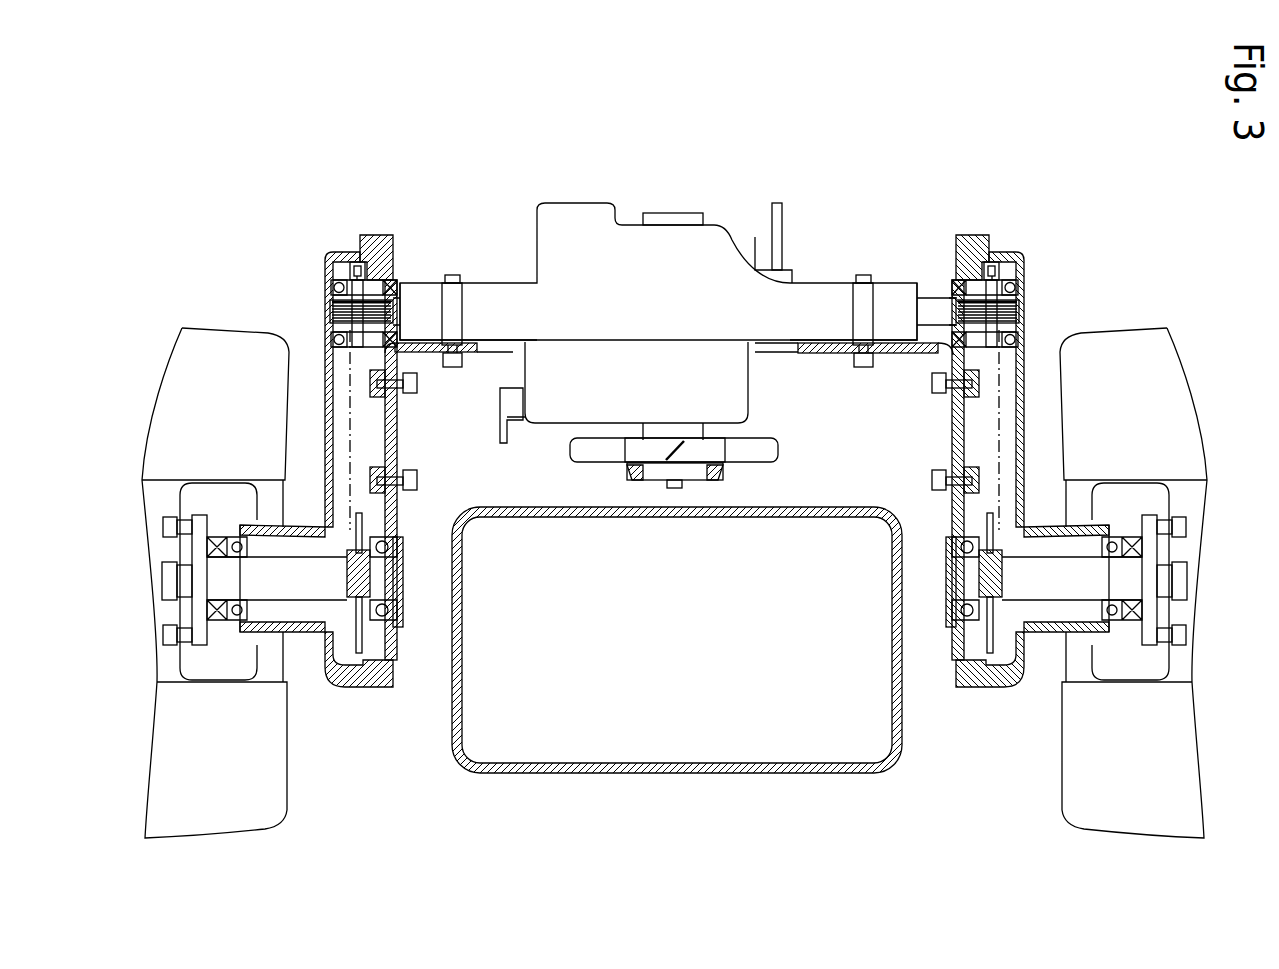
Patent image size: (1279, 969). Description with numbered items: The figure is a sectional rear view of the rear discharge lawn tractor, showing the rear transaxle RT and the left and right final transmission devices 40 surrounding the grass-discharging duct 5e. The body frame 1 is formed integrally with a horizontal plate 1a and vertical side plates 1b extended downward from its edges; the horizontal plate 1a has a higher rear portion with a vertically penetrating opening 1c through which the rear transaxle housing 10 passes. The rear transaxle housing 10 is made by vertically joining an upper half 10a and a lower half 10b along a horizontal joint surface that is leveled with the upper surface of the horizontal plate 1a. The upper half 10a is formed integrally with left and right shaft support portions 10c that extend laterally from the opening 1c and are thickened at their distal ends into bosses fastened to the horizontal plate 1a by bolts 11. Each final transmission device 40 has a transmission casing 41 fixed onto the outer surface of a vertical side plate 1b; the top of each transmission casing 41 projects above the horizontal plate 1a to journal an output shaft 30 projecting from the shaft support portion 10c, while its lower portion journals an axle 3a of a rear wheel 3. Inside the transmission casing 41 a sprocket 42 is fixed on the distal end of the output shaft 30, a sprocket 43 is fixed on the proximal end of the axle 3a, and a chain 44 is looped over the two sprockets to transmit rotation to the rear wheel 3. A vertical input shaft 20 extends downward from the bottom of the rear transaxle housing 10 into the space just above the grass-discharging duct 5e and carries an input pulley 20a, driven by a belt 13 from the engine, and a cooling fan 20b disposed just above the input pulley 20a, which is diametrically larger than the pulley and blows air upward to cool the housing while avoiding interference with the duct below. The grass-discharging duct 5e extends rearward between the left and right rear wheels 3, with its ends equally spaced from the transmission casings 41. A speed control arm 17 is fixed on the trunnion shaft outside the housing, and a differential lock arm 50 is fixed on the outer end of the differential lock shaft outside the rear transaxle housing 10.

The body frame 1 is at (937, 507).
The horizontal plate 1a is at (818, 348).
The vertical side plates 1b is at (403, 466).
The opening 1c is at (766, 350).
The rear wheels 3 is at (210, 330).
The axle 3a is at (303, 680).
The grass-discharging duct 5e is at (688, 775).
The rear transaxle housing 10 is at (600, 202).
The upper half 10a is at (640, 304).
The lower half 10b is at (637, 401).
The shaft support portions 10c is at (503, 300).
The bolts 11 is at (452, 275).
The belt 13 is at (628, 470).
The speed control arm 17 is at (778, 203).
The vertical input shaft 20 is at (670, 485).
The input pulley 20a is at (707, 482).
The cooling fan 20b is at (762, 465).
The output shaft 30 is at (327, 308).
The final transmission devices 40 is at (285, 230).
The transmission casing 41 is at (378, 235).
The sprocket 42 is at (356, 262).
The sprocket 43 is at (393, 683).
The chain 44 is at (330, 432).
The differential lock arm 50 is at (497, 418).
The rear transaxle RT is at (545, 157).